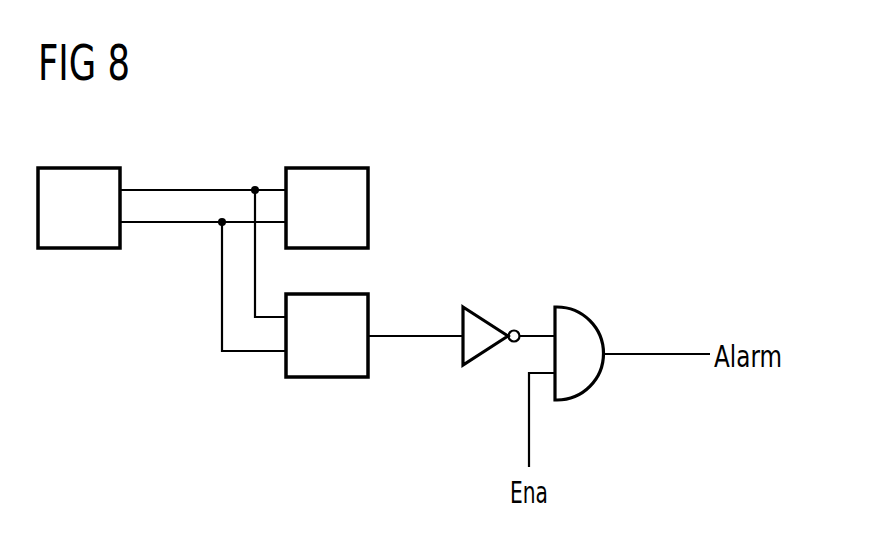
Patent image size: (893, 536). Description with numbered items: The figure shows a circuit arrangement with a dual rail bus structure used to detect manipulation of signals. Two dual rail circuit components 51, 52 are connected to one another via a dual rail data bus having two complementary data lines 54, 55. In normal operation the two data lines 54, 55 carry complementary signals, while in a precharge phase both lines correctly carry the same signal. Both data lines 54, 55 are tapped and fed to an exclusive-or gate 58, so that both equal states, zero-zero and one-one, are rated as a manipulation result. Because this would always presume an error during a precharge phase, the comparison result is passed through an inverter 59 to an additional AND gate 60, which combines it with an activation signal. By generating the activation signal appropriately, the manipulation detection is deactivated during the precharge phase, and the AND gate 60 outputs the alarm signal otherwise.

The dual rail circuit component 51 is at (82, 165).
The dual rail circuit component 52 is at (328, 166).
The complementary data line 54 is at (173, 189).
The complementary data line 55 is at (182, 223).
The XOR gate 58 is at (323, 379).
The inverter 59 is at (487, 316).
The AND gate 60 is at (597, 382).